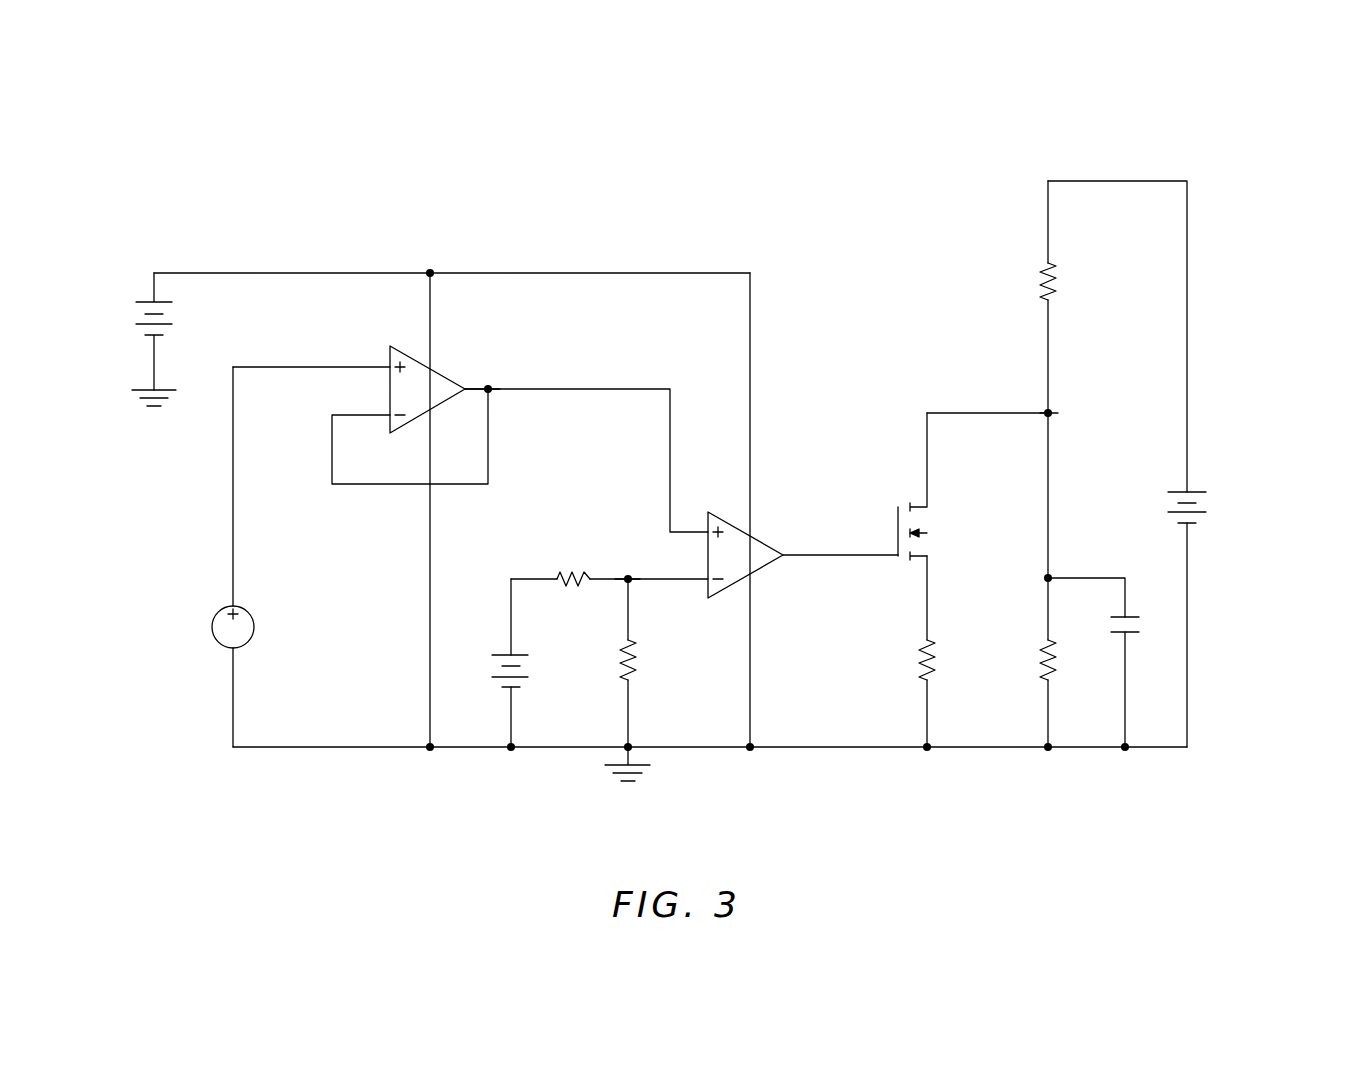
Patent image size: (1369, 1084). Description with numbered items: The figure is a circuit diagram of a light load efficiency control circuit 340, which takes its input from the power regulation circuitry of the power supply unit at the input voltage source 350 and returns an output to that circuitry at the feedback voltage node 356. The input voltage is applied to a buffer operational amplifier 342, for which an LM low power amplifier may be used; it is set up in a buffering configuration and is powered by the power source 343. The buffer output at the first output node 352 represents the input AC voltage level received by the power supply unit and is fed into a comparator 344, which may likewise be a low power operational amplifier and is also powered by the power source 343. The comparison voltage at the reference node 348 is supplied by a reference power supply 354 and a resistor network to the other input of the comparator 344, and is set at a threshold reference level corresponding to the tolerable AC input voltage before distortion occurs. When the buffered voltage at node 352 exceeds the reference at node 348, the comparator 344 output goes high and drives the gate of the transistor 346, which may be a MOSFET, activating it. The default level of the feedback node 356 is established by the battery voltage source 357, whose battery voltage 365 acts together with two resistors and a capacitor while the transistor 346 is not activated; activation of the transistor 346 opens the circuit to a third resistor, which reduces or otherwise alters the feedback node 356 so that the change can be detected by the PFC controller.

The light load efficiency control circuit 340 is at (1037, 134).
The operational amplifier 342 is at (445, 375).
The power source Vpwr 343 is at (133, 313).
The comparator 344 is at (762, 570).
The transistor Q1 346 is at (898, 467).
The V2 348 is at (624, 583).
The pulse voltage source V3 350 is at (212, 622).
The V1 352 is at (514, 355).
The power supply 354 is at (495, 668).
The feedback voltage level VFB 356 is at (1082, 393).
The voltage source V4 357 is at (1255, 482).
The battery voltage V4 365 is at (1206, 489).